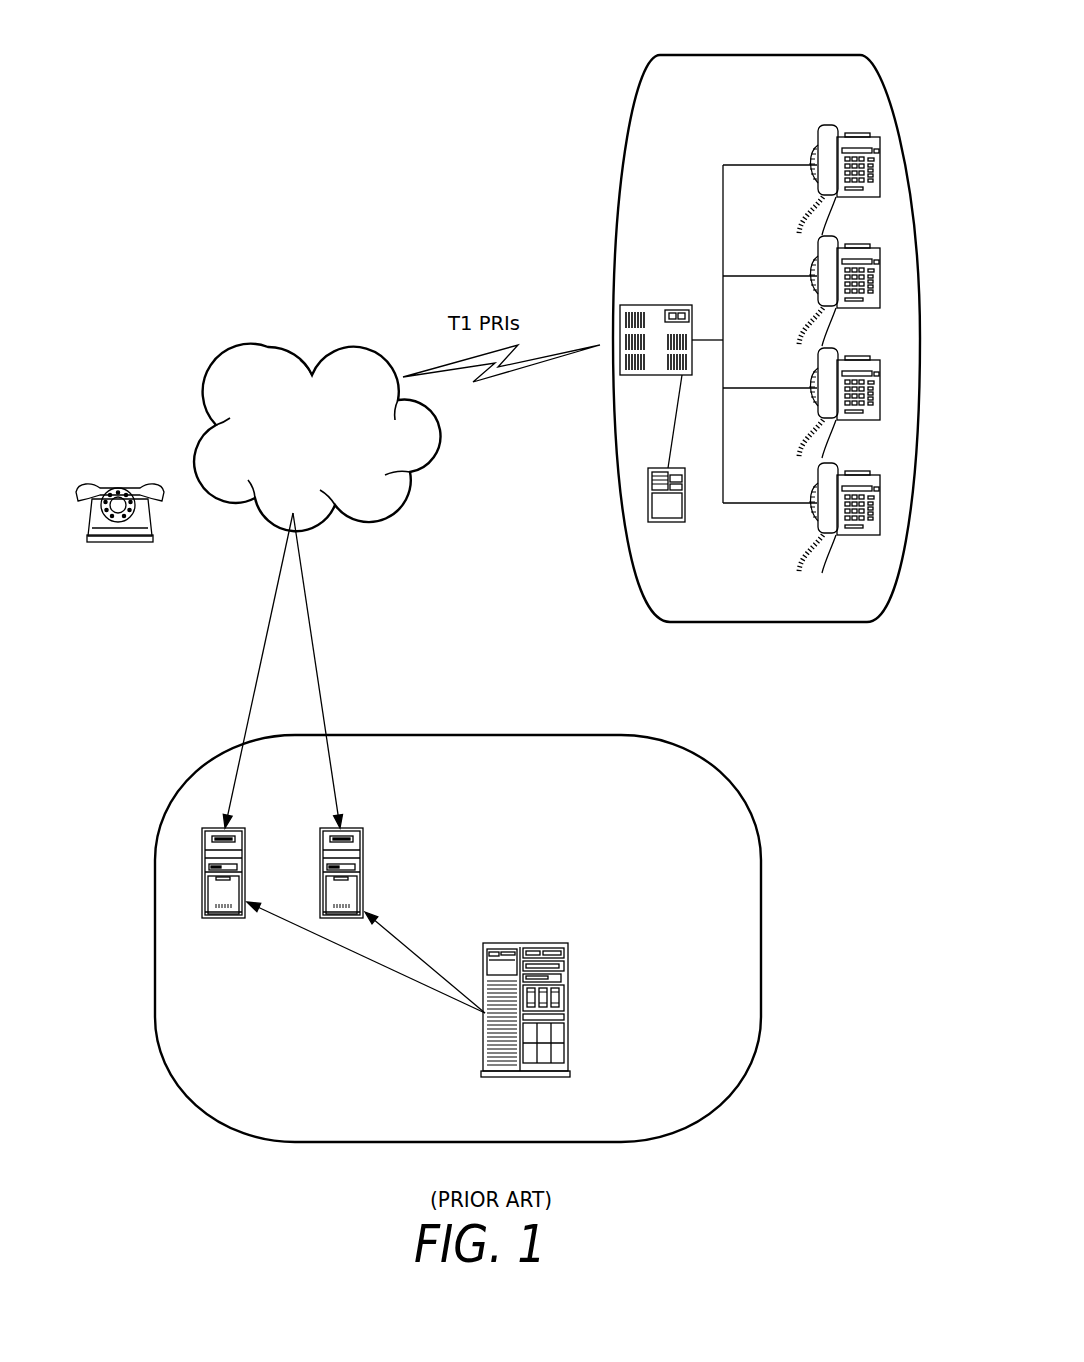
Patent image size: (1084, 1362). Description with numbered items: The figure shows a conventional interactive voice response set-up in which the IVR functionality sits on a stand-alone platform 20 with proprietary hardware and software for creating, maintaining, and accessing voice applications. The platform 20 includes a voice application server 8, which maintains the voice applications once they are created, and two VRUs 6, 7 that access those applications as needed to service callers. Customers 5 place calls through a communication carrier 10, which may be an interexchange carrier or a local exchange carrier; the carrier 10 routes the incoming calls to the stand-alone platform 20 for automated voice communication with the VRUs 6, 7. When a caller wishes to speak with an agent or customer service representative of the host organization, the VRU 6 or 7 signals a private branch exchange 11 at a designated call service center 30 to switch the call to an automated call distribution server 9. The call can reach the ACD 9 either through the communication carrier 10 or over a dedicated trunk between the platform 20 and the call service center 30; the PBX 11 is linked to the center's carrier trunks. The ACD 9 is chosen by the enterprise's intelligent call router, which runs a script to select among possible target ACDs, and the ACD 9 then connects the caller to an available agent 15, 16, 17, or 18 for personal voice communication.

The customers 5 is at (118, 482).
The VRU 6 is at (224, 918).
The VRU 7 is at (363, 873).
The voice application server 8 is at (568, 1007).
The automated call distribution server (ACD) 9 is at (660, 468).
The communication carrier 10 is at (309, 350).
The private branch exchange (PBX) 11 is at (656, 305).
The agent 15 is at (856, 133).
The agent 16 is at (856, 244).
The agent 17 is at (856, 356).
The agent 18 is at (856, 471).
The stand-alone IVR platform 20 is at (458, 735).
The call service center 30 is at (766, 55).